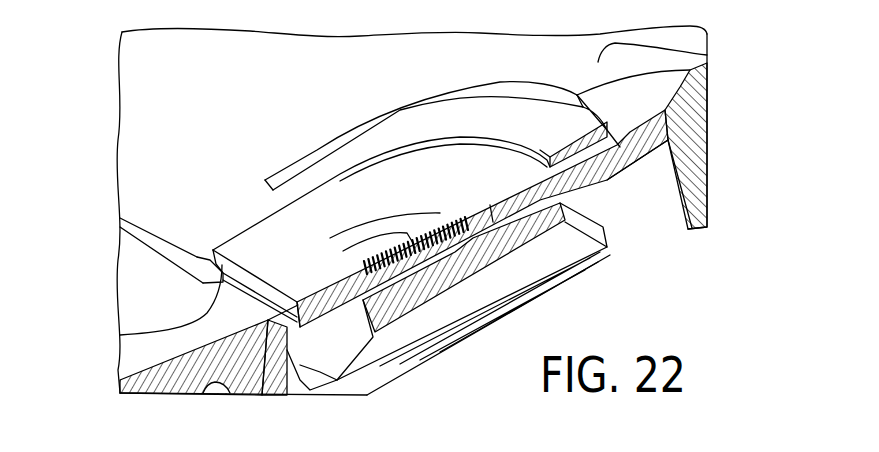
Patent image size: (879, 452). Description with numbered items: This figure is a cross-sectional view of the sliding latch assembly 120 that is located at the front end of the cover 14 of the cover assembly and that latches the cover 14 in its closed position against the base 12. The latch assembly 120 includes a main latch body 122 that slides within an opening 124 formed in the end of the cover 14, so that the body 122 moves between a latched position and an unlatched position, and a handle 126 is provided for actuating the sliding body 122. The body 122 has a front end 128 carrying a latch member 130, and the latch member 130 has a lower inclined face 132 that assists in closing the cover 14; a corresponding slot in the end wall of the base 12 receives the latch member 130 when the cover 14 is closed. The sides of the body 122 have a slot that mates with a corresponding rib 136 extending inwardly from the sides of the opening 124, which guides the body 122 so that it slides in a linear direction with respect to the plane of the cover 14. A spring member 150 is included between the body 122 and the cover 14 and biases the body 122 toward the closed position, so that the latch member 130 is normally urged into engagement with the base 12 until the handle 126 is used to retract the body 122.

The base 12 is at (173, 300).
The cover 14 is at (702, 57).
The sliding latch assembly 120 is at (252, 220).
The main latch body 122 is at (400, 381).
The opening 124 is at (119, 249).
The handle 126 is at (325, 140).
The front end 128 is at (248, 279).
The latch member 130 is at (258, 396).
The lower inclined face 132 is at (301, 386).
The rib 136 is at (121, 336).
The spring member 150 is at (478, 246).